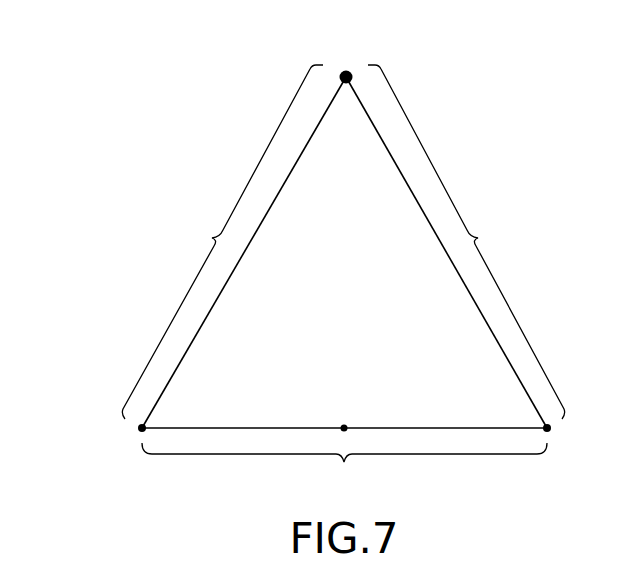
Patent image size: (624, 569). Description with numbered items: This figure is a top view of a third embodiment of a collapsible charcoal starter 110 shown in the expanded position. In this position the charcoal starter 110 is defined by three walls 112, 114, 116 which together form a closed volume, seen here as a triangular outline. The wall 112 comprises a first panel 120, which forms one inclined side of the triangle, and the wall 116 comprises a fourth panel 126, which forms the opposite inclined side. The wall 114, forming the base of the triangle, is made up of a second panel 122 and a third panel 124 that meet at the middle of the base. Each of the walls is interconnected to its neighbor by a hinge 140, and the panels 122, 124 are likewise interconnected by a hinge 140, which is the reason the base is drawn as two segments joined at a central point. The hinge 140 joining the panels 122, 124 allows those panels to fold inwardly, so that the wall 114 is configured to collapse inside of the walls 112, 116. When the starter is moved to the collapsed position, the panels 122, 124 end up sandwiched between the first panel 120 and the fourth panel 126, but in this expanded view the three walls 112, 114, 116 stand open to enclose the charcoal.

The charcoal starter 110 is at (128, 144).
The wall 112 is at (222, 242).
The wall 114 is at (344, 470).
The wall 116 is at (466, 242).
The first panel 120 is at (240, 252).
The second panel 122 is at (243, 428).
The third panel 124 is at (442, 428).
The fourth panel 126 is at (450, 253).
The hinge 140 is at (349, 72).